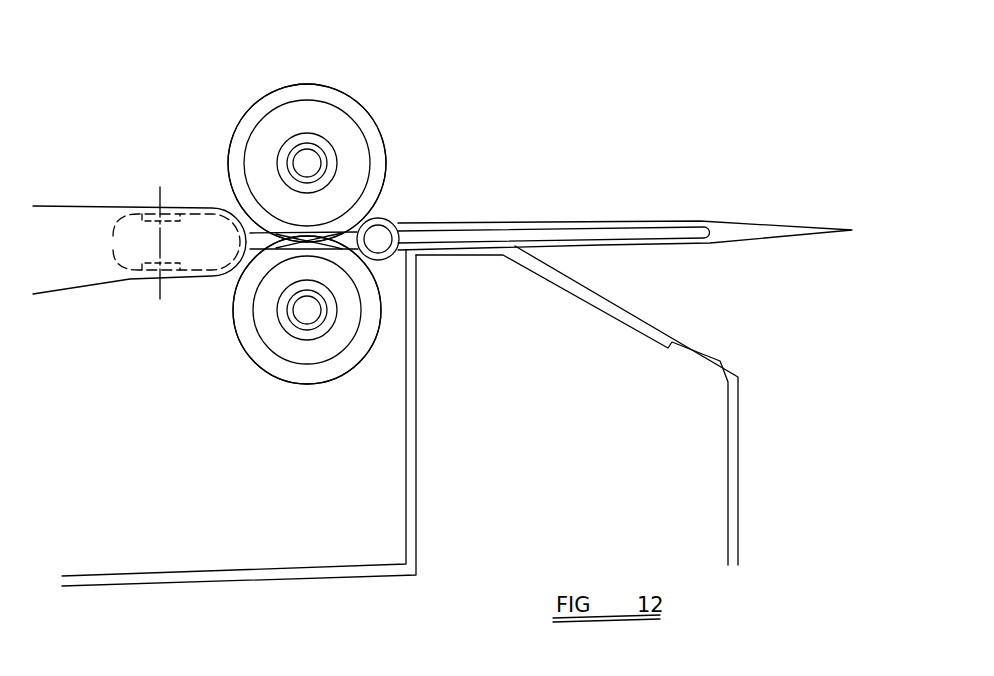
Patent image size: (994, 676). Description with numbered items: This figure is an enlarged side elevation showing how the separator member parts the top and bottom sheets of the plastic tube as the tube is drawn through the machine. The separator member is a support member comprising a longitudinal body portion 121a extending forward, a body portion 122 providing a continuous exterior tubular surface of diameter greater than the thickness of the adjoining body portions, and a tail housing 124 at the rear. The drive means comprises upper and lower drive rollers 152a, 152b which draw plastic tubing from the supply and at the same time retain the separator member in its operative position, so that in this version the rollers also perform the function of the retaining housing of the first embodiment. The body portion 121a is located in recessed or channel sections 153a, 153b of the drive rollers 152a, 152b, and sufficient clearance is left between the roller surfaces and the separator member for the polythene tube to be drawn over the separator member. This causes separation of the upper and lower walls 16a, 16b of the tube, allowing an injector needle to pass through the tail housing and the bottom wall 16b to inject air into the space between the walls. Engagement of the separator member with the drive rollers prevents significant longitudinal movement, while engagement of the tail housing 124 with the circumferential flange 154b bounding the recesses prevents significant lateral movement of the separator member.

The upper wall 16a is at (81, 206).
The bottom wall 16b is at (70, 292).
The tail housing 124 is at (118, 284).
The longitudinal body portion 121a is at (637, 235).
The body portion 122 is at (390, 220).
The drive roller 152a is at (362, 147).
The drive roller 152b is at (376, 345).
The recessed or channel section 153a is at (338, 222).
The recessed or channel section 153b is at (366, 294).
The circumferential flange 154b is at (233, 135).